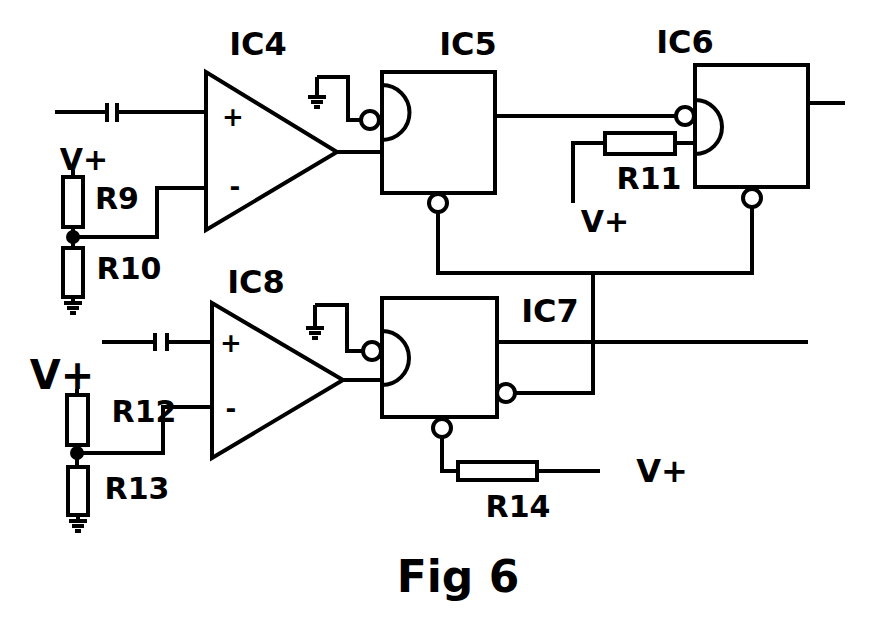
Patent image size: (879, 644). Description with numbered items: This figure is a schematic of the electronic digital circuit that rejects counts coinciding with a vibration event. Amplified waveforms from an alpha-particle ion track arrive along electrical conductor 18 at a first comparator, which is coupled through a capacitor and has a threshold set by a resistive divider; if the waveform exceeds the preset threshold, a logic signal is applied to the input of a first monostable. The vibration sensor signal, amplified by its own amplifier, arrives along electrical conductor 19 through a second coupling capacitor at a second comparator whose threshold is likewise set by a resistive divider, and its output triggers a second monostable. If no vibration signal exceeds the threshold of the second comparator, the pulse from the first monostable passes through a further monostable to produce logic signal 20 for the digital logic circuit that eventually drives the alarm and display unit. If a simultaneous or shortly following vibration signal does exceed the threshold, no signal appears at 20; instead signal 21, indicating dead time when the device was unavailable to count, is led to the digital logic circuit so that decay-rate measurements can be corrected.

The electrical conductor 18 is at (62, 110).
The electrical conductor 19 is at (123, 342).
The logic signal 20 is at (818, 92).
The dead-time signal 21 is at (803, 342).